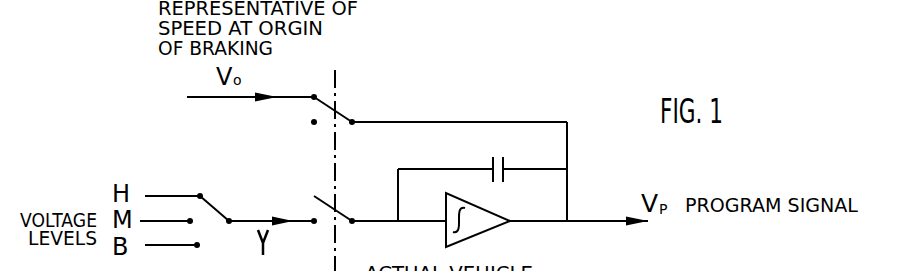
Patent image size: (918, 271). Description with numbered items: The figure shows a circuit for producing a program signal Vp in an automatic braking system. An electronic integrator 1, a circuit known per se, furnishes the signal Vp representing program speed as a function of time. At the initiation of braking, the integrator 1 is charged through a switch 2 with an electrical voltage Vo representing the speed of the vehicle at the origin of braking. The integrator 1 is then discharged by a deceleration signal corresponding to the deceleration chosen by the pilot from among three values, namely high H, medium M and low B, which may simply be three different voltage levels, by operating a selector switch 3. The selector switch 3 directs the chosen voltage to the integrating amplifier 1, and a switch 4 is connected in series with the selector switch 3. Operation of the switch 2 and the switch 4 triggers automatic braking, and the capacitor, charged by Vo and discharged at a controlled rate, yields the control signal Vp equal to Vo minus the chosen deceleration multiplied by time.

The electronic integrator 1 is at (470, 228).
The switch 2 is at (343, 113).
The selector switch 3 is at (214, 207).
The switch 4 is at (340, 213).